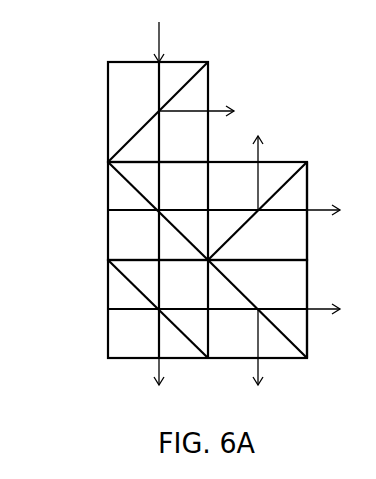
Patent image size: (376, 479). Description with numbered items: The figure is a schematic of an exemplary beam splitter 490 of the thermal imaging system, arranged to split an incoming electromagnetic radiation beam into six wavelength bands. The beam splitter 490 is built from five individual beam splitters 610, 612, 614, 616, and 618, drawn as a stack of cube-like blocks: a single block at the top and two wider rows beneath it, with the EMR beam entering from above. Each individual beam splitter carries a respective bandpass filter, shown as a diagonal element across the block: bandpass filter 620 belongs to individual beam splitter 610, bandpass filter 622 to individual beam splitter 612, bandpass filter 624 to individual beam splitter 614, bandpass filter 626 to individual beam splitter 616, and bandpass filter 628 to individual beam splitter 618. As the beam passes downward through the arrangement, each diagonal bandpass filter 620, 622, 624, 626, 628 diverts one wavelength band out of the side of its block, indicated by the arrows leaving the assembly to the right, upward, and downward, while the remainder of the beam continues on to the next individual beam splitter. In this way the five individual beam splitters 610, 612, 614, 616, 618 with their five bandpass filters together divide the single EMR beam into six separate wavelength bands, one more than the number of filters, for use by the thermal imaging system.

The beam splitter 490 is at (264, 70).
The individual beam splitter 610 is at (108, 130).
The individual beam splitter 612 is at (108, 219).
The individual beam splitter 614 is at (108, 317).
The individual beam splitter 616 is at (308, 178).
The individual beam splitter 618 is at (308, 338).
The bandpass filter 620 is at (140, 130).
The bandpass filter 622 is at (127, 181).
The bandpass filter 624 is at (128, 280).
The bandpass filter 626 is at (238, 230).
The bandpass filter 628 is at (243, 289).